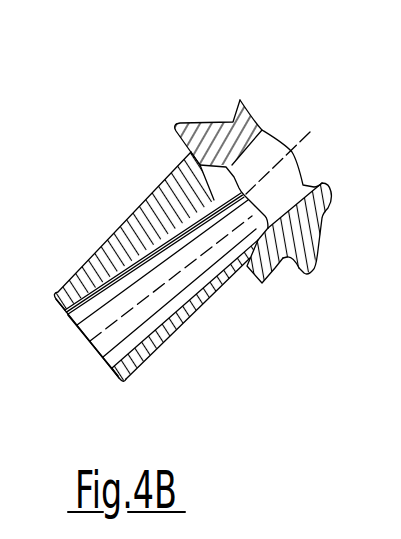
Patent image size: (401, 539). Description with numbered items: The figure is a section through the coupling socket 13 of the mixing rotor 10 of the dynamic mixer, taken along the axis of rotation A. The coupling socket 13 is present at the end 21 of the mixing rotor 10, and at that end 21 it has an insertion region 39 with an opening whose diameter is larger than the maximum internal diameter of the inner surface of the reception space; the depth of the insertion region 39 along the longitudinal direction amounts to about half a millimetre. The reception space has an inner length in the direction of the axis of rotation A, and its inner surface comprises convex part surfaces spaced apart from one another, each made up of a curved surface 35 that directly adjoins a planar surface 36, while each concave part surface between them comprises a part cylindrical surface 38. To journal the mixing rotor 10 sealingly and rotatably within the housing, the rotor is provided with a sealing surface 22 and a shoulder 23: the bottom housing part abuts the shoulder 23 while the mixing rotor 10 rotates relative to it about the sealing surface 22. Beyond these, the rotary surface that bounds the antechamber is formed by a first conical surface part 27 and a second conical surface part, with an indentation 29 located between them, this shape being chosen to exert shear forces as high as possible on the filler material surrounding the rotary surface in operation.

The mixing rotor 10 is at (212, 62).
The coupling socket 13 is at (147, 367).
The end 21 is at (122, 384).
The sealing surface 22 is at (259, 273).
The shoulder 23 is at (294, 274).
The first conical surface part 27 is at (320, 252).
The indentation 29 is at (229, 120).
The curved surface 35 is at (261, 131).
The planar surface 36 is at (250, 190).
The part cylindrical surface 38 is at (236, 205).
The insertion region 39 is at (84, 346).
The axis of rotation A is at (301, 141).